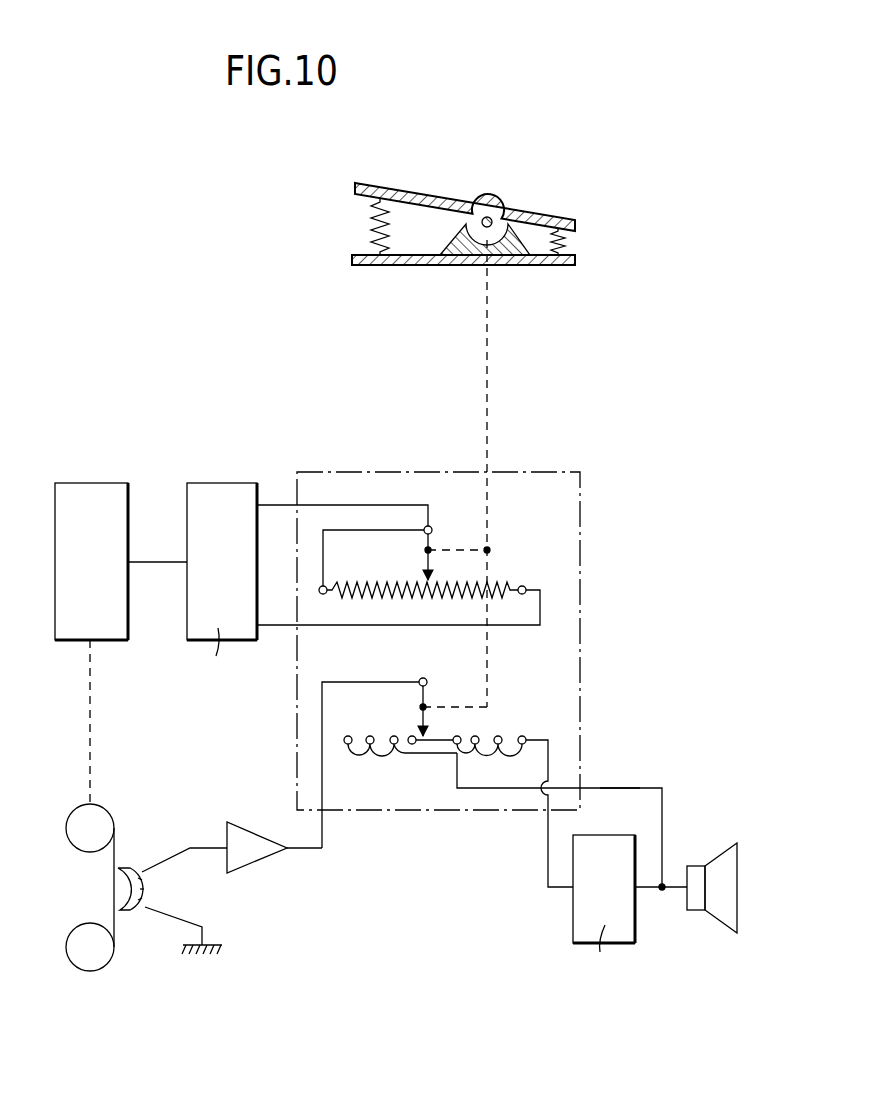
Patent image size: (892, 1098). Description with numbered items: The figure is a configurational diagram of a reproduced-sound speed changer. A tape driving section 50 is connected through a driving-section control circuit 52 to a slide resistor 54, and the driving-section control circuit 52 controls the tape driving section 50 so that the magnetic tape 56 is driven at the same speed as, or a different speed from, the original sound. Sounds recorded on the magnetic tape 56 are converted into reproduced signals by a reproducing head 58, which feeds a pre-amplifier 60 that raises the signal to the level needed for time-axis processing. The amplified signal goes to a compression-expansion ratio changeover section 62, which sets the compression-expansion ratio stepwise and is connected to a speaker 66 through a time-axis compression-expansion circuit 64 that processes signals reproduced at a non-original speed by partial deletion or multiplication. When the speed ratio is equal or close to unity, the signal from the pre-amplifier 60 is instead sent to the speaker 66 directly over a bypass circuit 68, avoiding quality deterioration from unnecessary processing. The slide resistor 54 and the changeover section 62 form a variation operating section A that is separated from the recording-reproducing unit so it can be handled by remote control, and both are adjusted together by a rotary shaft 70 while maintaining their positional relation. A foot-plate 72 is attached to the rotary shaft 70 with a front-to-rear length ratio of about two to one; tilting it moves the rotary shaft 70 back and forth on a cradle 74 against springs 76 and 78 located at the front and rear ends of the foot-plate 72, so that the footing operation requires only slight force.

The tape driving section 50 is at (98, 482).
The driving-section control circuit 52 is at (220, 482).
The slide resistor 54 is at (498, 575).
The magnetic tape 56 is at (112, 888).
The reproducing head 58 is at (140, 867).
The pre-amplifier 60 is at (260, 863).
The compression-expansion ratio changeover section 62 is at (508, 730).
The time-axis compression-expansion circuit 64 is at (572, 912).
The speaker 66 is at (708, 860).
The bypass circuit 68 is at (618, 788).
The rotary shaft 70 is at (490, 215).
The foot-plate 72 is at (537, 212).
The cradle 74 is at (538, 266).
The spring 76 is at (377, 226).
The spring 78 is at (567, 240).
The variation operating section A is at (580, 540).